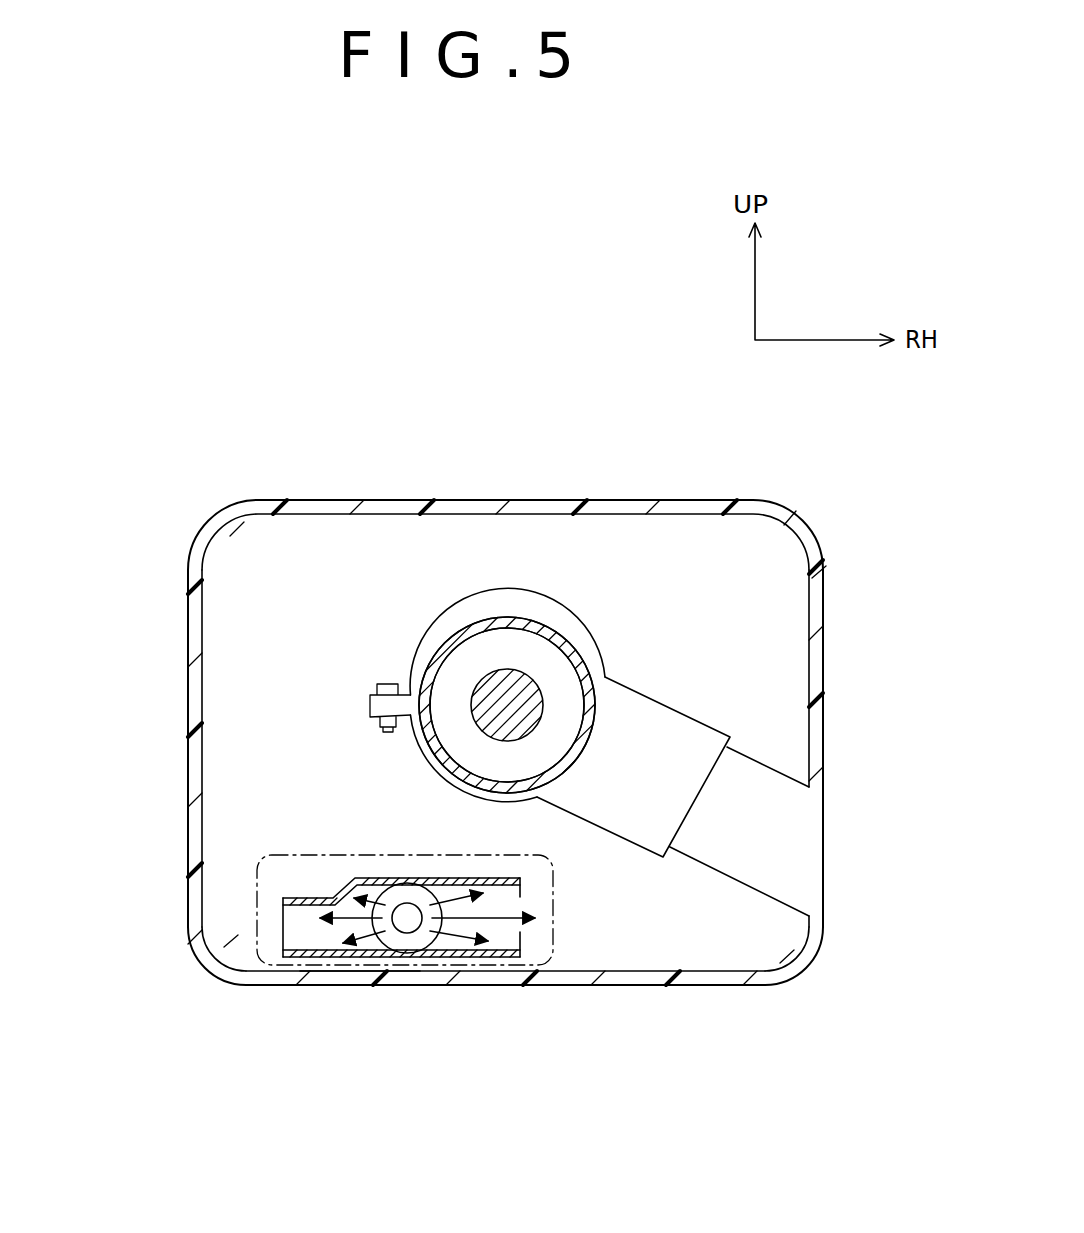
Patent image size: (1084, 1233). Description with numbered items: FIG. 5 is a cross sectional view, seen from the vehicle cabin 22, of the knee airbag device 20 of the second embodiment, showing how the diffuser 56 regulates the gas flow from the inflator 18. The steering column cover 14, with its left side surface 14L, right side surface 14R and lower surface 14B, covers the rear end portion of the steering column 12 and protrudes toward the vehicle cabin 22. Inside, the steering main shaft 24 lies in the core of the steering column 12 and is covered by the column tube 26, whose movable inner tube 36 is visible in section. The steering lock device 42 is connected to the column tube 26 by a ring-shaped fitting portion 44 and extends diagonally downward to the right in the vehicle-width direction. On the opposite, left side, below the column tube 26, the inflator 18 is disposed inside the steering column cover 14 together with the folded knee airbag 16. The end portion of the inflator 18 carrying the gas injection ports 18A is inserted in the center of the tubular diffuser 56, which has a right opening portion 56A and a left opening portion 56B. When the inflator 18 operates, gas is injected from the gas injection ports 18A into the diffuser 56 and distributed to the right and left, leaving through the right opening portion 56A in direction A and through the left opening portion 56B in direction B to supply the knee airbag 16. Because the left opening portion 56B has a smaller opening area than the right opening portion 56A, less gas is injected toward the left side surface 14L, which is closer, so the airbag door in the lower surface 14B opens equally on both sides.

The steering column 12 is at (588, 419).
The steering column cover 14 is at (513, 488).
The left side surface of the steering column cover 14L is at (188, 892).
The right side surface of the steering column cover 14R is at (823, 918).
The lower surface of the steering column cover 14B is at (534, 985).
The knee airbag 16 is at (302, 855).
The inflator 18 is at (408, 868).
The gas injection ports 18A is at (407, 925).
The knee airbag device 20 is at (390, 1028).
The vehicle cabin 22 is at (538, 1153).
The steering main shaft 24 is at (503, 668).
The column tube 26 is at (507, 705).
The inner tube 36 is at (548, 628).
The steering lock device 42 is at (668, 706).
The fitting portion 44 is at (428, 646).
The diffuser 56 is at (451, 866).
The right opening portion 56A is at (553, 895).
The left opening portion 56B is at (283, 922).